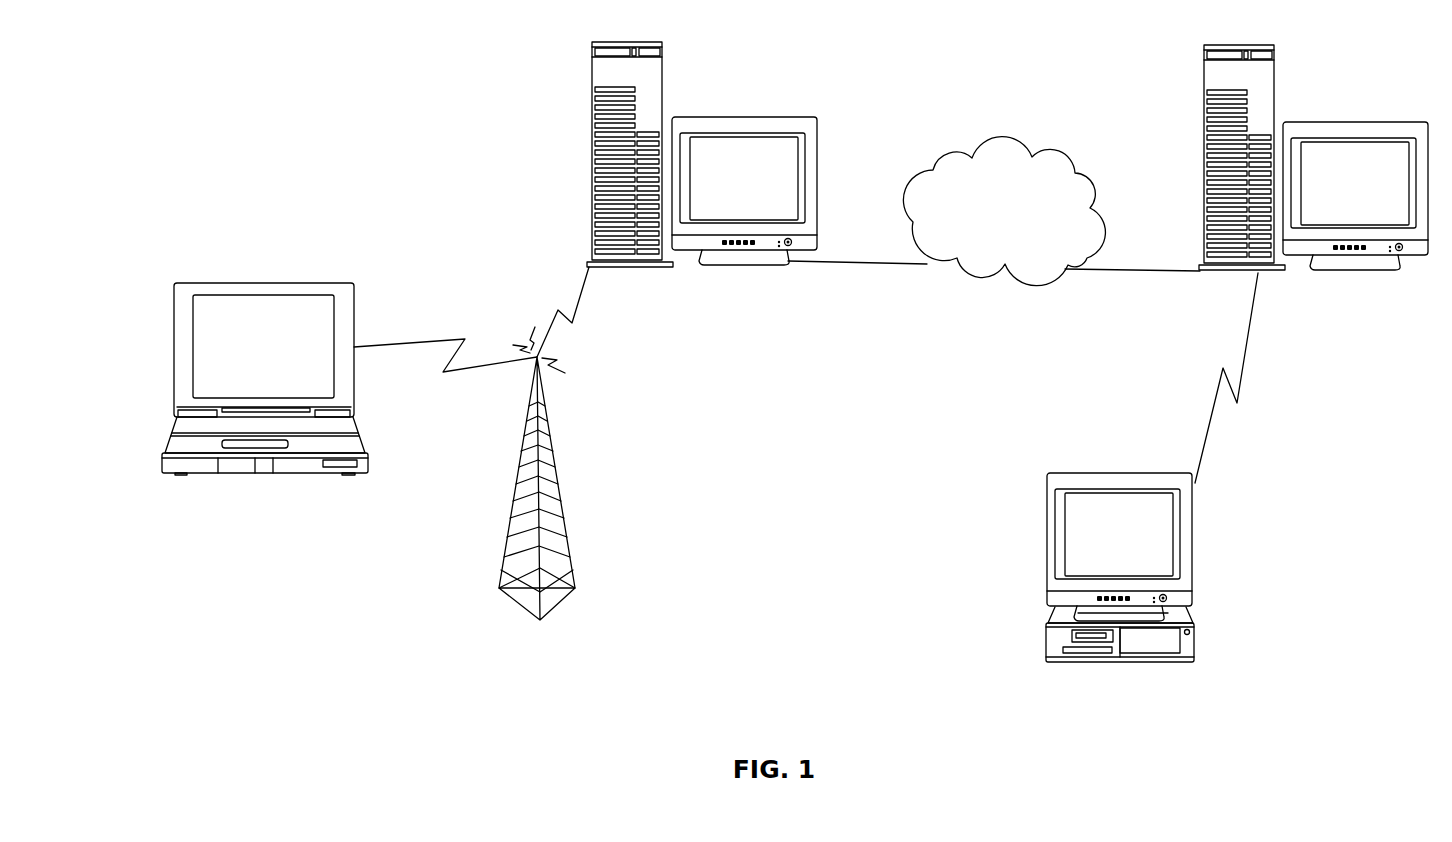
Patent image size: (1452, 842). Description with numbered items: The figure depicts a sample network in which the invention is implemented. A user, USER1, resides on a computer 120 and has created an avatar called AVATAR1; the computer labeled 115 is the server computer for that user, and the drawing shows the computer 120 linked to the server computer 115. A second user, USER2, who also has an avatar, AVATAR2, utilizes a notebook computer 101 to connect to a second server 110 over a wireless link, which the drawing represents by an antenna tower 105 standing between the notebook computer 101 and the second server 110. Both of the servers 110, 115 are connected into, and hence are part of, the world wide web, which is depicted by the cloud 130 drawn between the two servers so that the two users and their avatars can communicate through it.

The notebook computer 101 is at (265, 405).
The wireless antenna / base station 105 is at (537, 496).
The second server 110 is at (702, 184).
The server computer 115 is at (1313, 180).
The computer 120 is at (1120, 593).
The world wide web 130 is at (1004, 211).